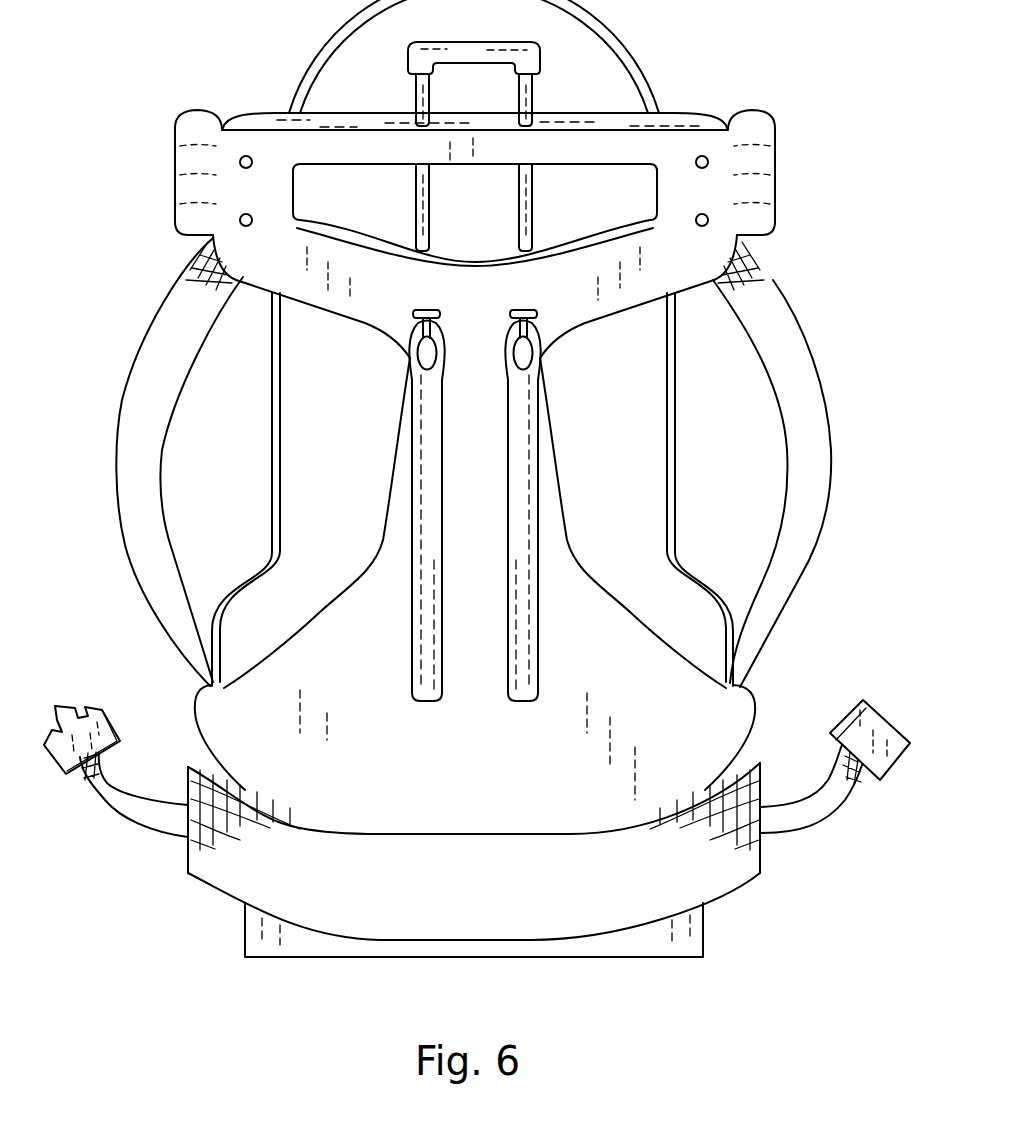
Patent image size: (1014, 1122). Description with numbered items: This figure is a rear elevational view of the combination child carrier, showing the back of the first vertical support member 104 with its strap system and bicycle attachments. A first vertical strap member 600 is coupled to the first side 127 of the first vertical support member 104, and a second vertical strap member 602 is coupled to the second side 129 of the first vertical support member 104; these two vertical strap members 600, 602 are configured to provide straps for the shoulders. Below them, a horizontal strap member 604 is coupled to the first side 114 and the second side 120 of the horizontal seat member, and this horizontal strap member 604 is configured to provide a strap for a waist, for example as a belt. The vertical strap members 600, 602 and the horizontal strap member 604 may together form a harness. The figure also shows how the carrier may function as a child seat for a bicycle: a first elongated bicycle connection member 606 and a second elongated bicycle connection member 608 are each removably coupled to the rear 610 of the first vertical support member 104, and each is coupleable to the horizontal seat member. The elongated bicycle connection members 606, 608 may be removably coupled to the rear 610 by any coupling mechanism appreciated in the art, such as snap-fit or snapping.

The first vertical support member 104 is at (357, 789).
The first side of the first horizontal seat member 114 is at (791, 858).
The second side of the first horizontal seat member 120 is at (160, 861).
The first side of the first vertical support member 127 is at (781, 245).
The second side of the first vertical support member 129 is at (176, 248).
The first vertical strap member 600 is at (806, 474).
The second vertical strap member 602 is at (147, 400).
The horizontal strap member 604 is at (640, 905).
The first elongated bicycle connection member 606 is at (525, 442).
The second elongated bicycle connection member 608 is at (415, 577).
The rear of the first vertical support member 610 is at (477, 787).